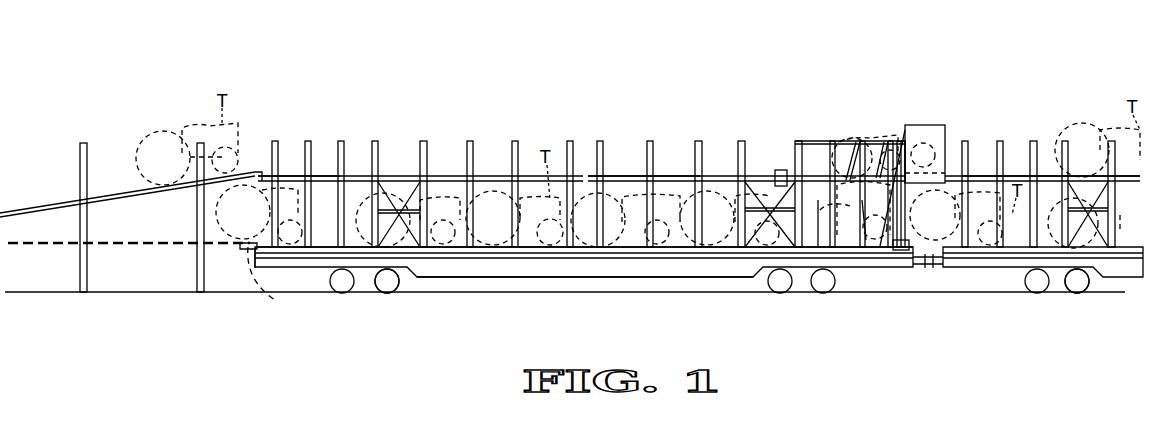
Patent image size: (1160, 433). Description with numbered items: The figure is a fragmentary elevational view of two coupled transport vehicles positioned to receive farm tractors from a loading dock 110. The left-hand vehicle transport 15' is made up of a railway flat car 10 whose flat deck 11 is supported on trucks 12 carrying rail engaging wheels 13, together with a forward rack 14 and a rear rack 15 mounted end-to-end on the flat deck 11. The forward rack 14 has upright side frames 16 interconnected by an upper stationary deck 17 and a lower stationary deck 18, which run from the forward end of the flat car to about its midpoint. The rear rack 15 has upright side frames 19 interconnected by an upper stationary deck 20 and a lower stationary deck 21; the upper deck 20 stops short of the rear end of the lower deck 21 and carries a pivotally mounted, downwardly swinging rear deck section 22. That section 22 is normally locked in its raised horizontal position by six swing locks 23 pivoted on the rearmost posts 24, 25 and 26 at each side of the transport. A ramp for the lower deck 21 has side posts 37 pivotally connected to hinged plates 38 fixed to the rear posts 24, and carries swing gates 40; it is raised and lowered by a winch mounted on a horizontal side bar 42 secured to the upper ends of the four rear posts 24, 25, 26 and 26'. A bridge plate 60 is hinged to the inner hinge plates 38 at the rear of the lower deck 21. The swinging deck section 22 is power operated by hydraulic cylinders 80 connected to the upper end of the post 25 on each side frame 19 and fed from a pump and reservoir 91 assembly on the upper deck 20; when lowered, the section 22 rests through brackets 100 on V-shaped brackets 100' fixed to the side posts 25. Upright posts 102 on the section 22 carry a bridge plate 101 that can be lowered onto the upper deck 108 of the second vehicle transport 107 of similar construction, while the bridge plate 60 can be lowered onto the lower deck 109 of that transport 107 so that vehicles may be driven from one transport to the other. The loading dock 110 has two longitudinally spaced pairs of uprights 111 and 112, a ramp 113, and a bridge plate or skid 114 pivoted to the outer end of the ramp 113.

The railway flat car 10 is at (468, 255).
The flat deck 11 is at (522, 268).
The trucks 12 is at (368, 278).
The rail engaging wheels 13 is at (392, 282).
The forward rack 14 is at (488, 150).
The rear rack 15 is at (739, 176).
The vehicle transport 15' is at (307, 286).
The upright side frames 16 is at (380, 152).
The upper stationary vehicle carrying deck 17 is at (441, 178).
The lower stationary vehicle carrying deck 18 is at (318, 247).
The upright side frames 19 is at (655, 158).
The upper stationary vehicle carrying deck 20 is at (622, 183).
The lower stationary vehicle carrying deck 21 is at (635, 255).
The downwardly swinging rear deck section 22 is at (836, 124).
The swing locks 23 is at (840, 206).
The rear post 24 is at (896, 248).
The post 25 is at (860, 228).
The post 26 is at (810, 264).
The rear post 26' is at (768, 231).
The side post 37 is at (905, 130).
The hinged plates 38 is at (900, 252).
The swing gate 40 is at (935, 127).
The horizontal side bar 42 is at (876, 143).
The bridge plate 60 is at (940, 266).
The hydraulic cylinders 80 is at (847, 150).
The reservoir 91 is at (784, 162).
The brackets 100 is at (866, 113).
The V-shaped brackets 100' is at (849, 289).
The bridge plate 101 is at (958, 175).
The upright posts 102 is at (888, 143).
The second vehicle transport 107 is at (1057, 135).
The upper deck 108 is at (1017, 178).
The lower deck 109 is at (1017, 250).
The loading dock 110 is at (97, 276).
The uprights 111 is at (83, 258).
The uprights 112 is at (200, 270).
The ramp 113 is at (137, 257).
The bridge plate or skid 114 is at (248, 170).